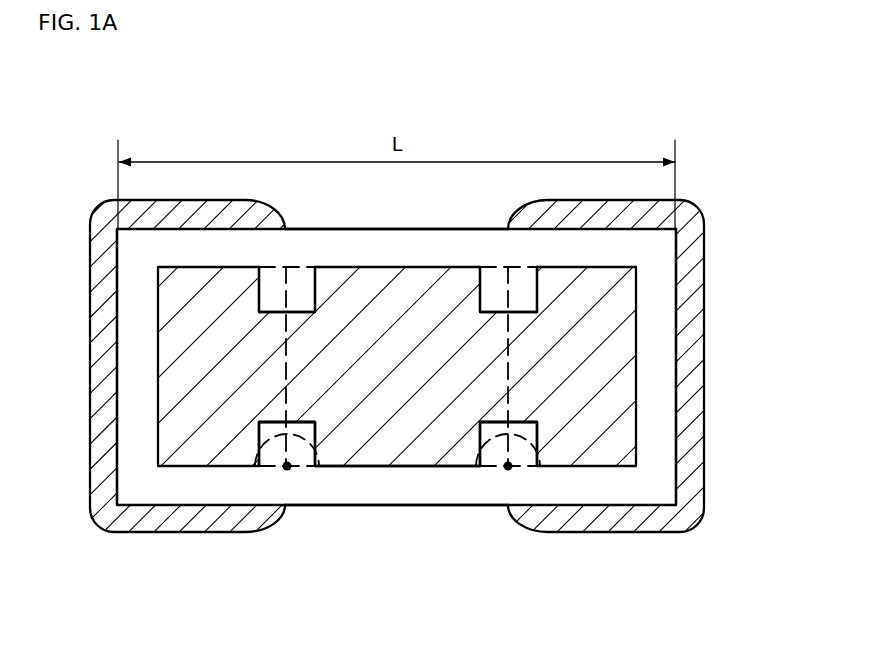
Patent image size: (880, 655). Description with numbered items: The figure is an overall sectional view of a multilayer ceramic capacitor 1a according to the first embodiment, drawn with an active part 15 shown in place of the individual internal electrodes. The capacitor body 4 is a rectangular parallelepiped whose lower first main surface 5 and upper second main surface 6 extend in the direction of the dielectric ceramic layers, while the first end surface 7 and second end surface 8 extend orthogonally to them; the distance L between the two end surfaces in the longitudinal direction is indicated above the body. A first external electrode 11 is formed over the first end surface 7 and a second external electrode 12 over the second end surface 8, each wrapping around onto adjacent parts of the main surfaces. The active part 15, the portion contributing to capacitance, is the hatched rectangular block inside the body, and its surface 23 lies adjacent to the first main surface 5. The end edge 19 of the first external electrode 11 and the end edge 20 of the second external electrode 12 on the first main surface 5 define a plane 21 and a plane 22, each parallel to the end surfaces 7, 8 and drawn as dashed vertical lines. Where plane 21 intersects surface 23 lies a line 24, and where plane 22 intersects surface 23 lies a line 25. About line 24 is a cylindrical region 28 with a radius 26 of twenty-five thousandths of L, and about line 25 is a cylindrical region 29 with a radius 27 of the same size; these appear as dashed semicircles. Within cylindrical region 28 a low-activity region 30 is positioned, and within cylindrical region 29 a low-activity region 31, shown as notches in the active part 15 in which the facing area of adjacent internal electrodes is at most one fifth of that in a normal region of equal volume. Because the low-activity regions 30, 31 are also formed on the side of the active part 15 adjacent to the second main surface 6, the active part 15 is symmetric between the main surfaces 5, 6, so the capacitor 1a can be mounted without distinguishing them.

The multilayer ceramic capacitor 1a is at (103, 103).
The capacitor body 4 is at (447, 221).
The first main surface 5 is at (395, 507).
The second main surface 6 is at (375, 228).
The first end surface 7 is at (117, 322).
The second end surface 8 is at (678, 338).
The first external electrode 11 is at (97, 293).
The second external electrode 12 is at (697, 295).
The active part 15 is at (648, 274).
The end edge of the first external electrode 19 is at (287, 467).
The end edge of the second external electrode 20 is at (508, 467).
The plane 21 is at (287, 362).
The plane 22 is at (508, 361).
The surface of the active part 23 is at (350, 468).
The line 24 is at (287, 466).
The line 25 is at (508, 466).
The radius 26 is at (277, 434).
The radius 27 is at (488, 441).
The cylindrical region 28 is at (267, 441).
The cylindrical region 29 is at (523, 437).
The low-activity region 30 is at (298, 282).
The low-activity region 31 is at (495, 282).